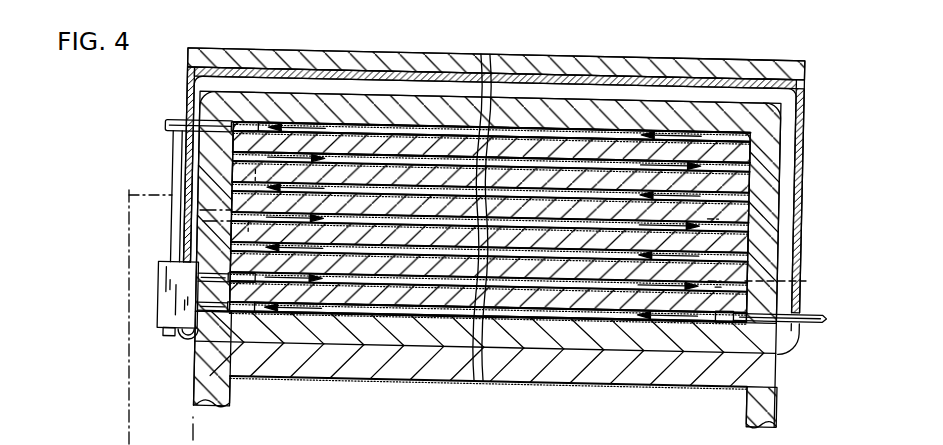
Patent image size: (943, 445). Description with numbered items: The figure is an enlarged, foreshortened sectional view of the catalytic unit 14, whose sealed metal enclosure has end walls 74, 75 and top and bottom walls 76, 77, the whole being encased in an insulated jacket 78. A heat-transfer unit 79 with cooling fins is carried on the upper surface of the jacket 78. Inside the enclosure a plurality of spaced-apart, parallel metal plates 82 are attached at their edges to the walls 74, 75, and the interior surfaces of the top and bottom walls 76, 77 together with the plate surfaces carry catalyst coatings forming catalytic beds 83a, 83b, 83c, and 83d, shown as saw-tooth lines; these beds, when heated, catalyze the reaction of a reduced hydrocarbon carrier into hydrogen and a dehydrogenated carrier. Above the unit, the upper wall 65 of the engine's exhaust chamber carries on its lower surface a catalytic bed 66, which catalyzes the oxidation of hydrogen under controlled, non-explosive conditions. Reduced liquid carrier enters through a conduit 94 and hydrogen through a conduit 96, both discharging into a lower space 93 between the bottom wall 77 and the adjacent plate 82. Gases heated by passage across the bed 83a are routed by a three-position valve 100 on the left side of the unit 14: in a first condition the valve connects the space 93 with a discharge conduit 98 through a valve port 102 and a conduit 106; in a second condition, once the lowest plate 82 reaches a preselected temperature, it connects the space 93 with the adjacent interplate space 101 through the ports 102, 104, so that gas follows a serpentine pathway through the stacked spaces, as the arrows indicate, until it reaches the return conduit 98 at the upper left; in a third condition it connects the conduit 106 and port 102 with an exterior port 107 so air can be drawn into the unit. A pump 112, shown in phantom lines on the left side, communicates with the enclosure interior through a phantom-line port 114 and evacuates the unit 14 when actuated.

The catalytic unit 14 is at (806, 104).
The upper wall of exhaust chamber 65 is at (647, 367).
The catalytic bed 66 is at (712, 385).
The end wall 74 is at (770, 182).
The end wall 75 is at (207, 183).
The top wall 76 is at (578, 100).
The bottom wall 77 is at (580, 337).
The insulated jacket 78 is at (800, 216).
The heat-transfer unit 79 is at (732, 64).
The metal plates 82 is at (643, 270).
The catalytic bed 83a is at (420, 314).
The catalytic bed 83b is at (418, 143).
The catalytic bed 83c is at (398, 155).
The catalytic bed 83d is at (333, 125).
The lower space 93 is at (358, 305).
The conduit 94 is at (821, 325).
The conduit 96 is at (776, 378).
The conduit 98 is at (165, 126).
The three-position valve 100 is at (168, 297).
The interplate space 101 is at (493, 402).
The valve port 102 is at (213, 327).
The valve port 104 is at (213, 262).
The conduit 106 is at (173, 150).
The exterior port 107 is at (168, 340).
The pump 112 is at (139, 412).
The port 114 is at (231, 212).